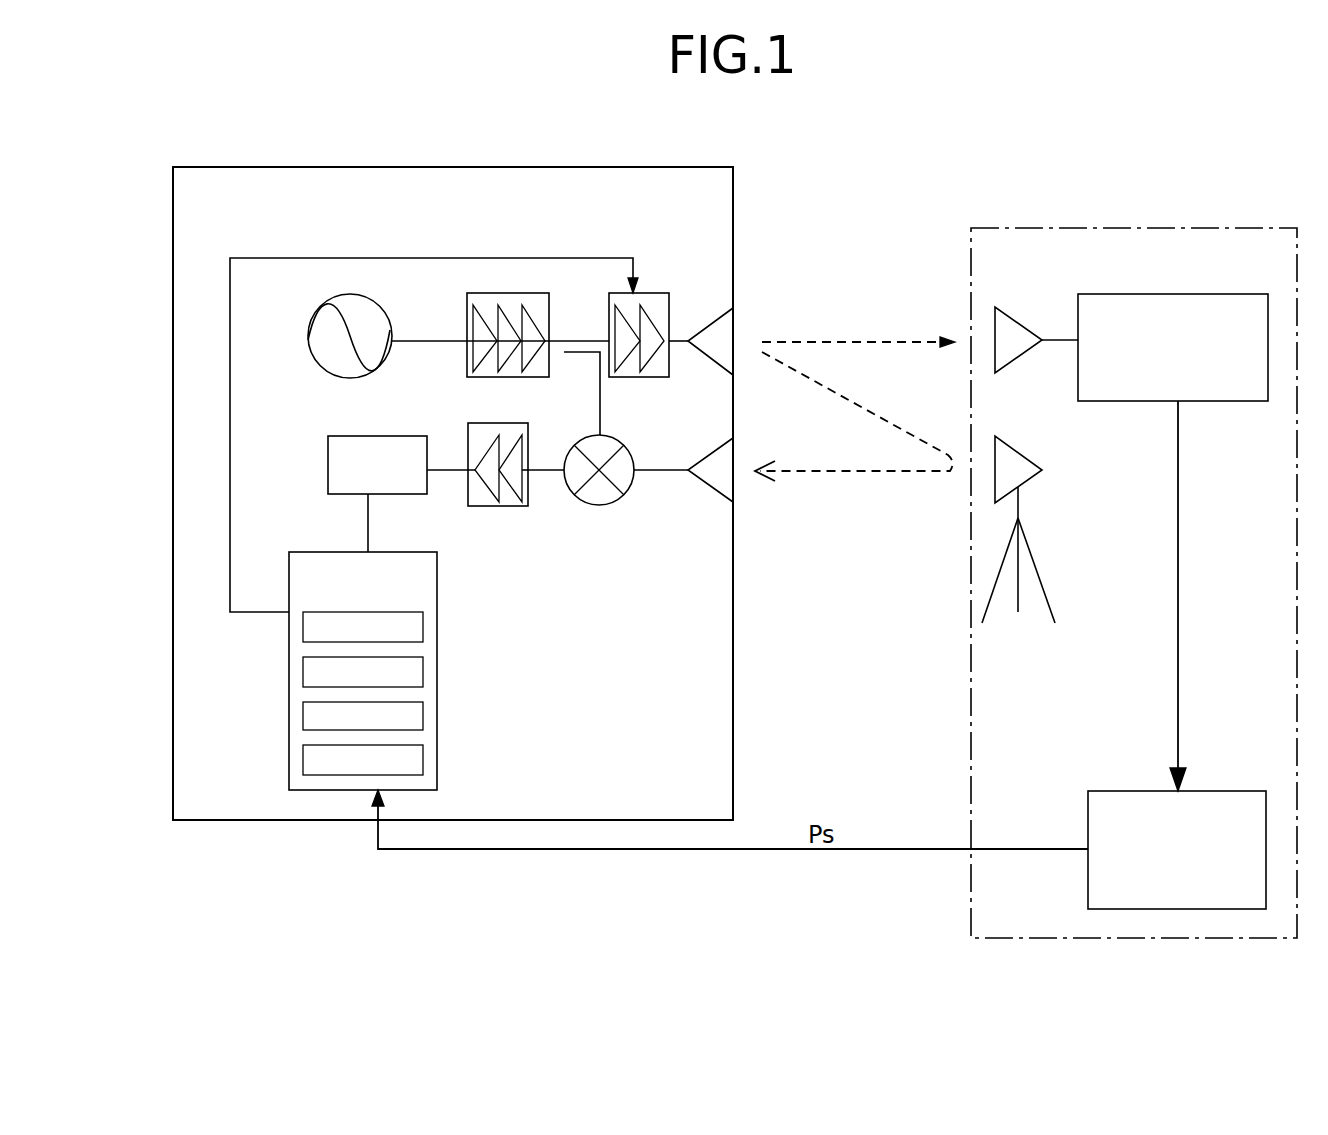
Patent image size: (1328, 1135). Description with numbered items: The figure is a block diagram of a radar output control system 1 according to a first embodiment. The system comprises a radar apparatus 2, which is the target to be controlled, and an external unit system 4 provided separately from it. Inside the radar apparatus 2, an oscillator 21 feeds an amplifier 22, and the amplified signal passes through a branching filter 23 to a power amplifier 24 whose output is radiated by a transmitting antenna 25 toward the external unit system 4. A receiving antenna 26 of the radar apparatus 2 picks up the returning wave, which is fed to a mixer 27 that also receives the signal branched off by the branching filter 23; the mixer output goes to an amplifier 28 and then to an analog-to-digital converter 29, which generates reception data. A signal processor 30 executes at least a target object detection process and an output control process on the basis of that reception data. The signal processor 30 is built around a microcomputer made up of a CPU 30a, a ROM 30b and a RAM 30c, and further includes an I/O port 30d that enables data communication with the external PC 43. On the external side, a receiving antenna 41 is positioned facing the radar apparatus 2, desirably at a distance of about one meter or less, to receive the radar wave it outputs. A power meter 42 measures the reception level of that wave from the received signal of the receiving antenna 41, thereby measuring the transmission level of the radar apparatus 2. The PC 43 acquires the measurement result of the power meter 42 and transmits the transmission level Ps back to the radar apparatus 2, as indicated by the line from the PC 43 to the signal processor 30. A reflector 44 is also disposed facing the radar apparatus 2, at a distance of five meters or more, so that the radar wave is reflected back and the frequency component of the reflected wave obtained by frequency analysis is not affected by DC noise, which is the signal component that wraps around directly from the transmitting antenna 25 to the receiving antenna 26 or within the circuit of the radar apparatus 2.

The radar output control system 1 is at (967, 122).
The radar apparatus 2 is at (674, 167).
The external unit system 4 is at (1001, 228).
The oscillator 21 is at (378, 307).
The amplifier 22 is at (524, 293).
The branching filter 23 is at (577, 360).
The power amplifier 24 is at (655, 293).
The transmitting antenna 25 is at (720, 312).
The receiving antenna 26 is at (718, 496).
The mixer 27 is at (599, 505).
The amplifier 28 is at (510, 506).
The analog-to-digital converter 29 is at (328, 450).
The signal processor 30 is at (391, 648).
The CPU 30a is at (423, 627).
The ROM 30b is at (423, 672).
The RAM 30c is at (423, 716).
The I/O port 30d is at (423, 760).
The receiving antenna 41 is at (1017, 322).
The power meter 42 is at (1105, 294).
The PC 43 is at (1117, 791).
The reflector 44 is at (1017, 452).